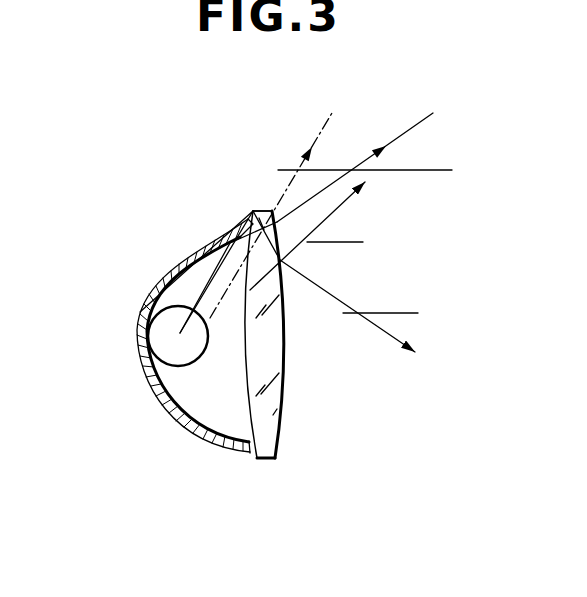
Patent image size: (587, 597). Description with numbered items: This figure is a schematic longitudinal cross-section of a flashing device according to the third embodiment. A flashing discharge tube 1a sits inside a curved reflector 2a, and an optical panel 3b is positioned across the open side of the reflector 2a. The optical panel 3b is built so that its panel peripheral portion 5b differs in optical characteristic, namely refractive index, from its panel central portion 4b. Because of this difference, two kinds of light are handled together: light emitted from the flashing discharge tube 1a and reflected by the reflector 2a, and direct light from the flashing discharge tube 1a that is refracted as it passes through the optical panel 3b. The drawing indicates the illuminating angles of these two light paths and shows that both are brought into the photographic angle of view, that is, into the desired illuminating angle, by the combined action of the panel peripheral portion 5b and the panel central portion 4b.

The flashing discharge tube 1a is at (141, 339).
The reflector 2a is at (165, 403).
The optical panel 3b is at (279, 409).
The panel central portion 4b is at (290, 332).
The panel peripheral portion 5b is at (251, 207).